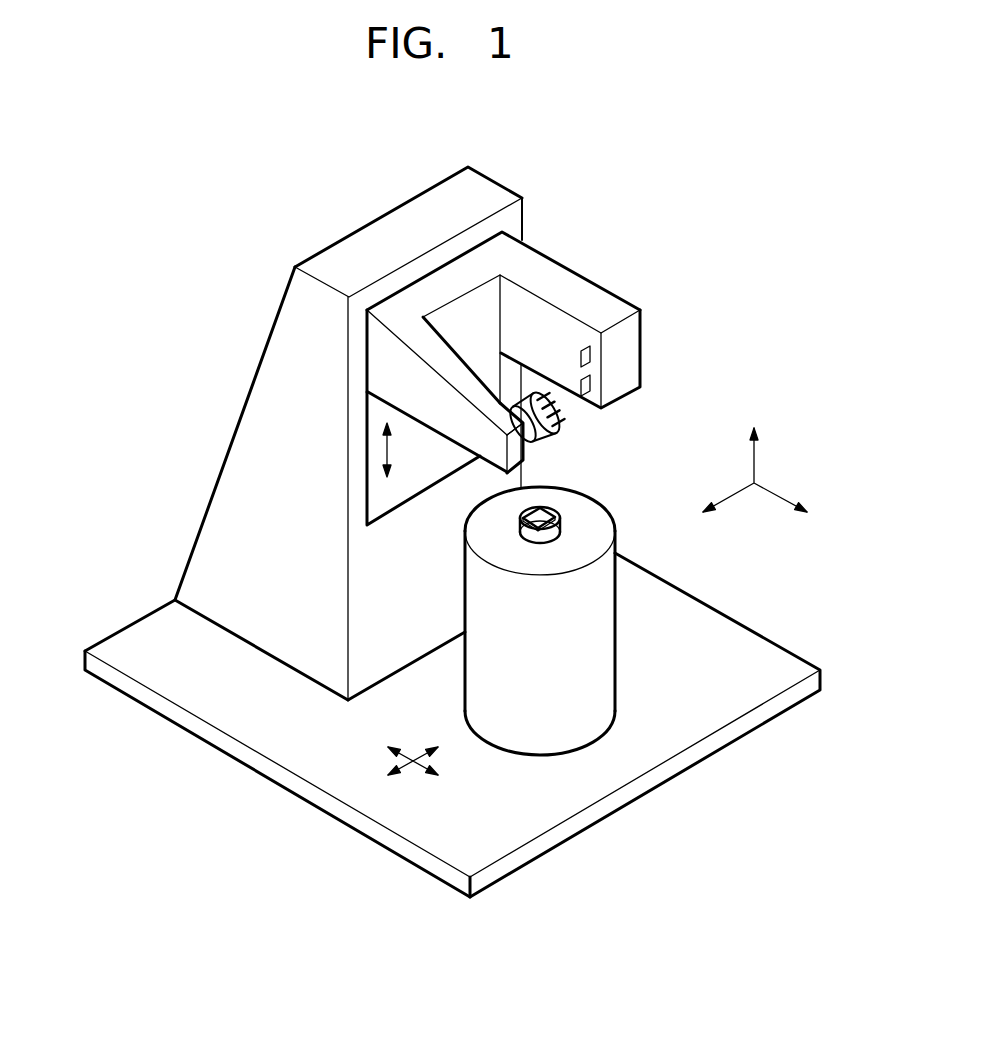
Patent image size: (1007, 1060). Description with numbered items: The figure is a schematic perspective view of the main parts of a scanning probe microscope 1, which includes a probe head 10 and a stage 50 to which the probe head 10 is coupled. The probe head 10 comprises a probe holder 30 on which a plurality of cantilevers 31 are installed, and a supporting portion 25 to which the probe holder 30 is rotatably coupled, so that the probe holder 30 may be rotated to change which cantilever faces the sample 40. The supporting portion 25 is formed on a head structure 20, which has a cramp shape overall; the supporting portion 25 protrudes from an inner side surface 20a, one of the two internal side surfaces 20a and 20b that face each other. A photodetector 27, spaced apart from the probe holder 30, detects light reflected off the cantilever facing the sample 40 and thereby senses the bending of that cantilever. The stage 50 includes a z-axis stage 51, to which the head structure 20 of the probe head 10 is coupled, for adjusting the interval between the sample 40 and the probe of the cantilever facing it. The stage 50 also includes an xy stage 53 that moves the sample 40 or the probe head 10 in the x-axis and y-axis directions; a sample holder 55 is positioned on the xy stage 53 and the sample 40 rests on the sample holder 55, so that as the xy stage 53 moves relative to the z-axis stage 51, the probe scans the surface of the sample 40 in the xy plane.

The scanning probe microscope 1 is at (192, 172).
The probe head 10 is at (590, 262).
The head structure 20 is at (594, 307).
The inner side surface 20a is at (450, 343).
The internal side surface 20b is at (543, 320).
The supporting portion 25 is at (590, 385).
The photodetector 27 is at (590, 357).
The probe holder 30 is at (555, 442).
The cantilevers 31 is at (562, 420).
The sample 40 is at (550, 505).
The stage 50 is at (178, 535).
The z-axis stage 51 is at (373, 413).
The xy stage 53 is at (338, 768).
The sample holder 55 is at (560, 530).